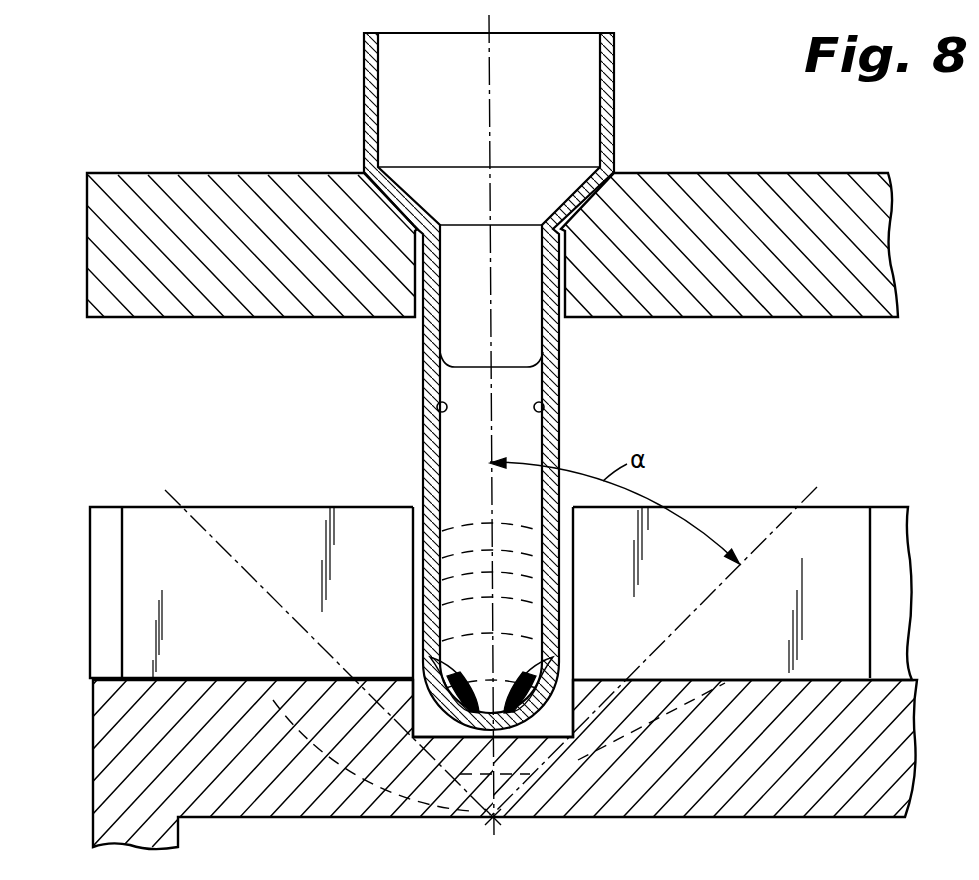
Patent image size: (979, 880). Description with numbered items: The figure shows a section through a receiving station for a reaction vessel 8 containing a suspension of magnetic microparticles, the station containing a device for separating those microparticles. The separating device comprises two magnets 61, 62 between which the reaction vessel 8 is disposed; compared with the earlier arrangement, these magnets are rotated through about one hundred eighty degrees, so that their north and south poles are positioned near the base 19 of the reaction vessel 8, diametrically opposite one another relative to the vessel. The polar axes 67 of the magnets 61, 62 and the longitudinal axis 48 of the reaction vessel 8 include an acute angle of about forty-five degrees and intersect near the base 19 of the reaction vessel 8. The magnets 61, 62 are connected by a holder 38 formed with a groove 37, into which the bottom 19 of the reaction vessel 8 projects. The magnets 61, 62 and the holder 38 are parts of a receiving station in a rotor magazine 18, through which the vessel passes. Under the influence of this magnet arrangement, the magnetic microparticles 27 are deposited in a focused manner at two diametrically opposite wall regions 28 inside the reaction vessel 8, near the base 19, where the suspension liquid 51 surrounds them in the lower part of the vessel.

The reaction vessel 8 is at (614, 77).
The longitudinal axis 48 is at (492, 123).
The rotor magazine 18 is at (715, 174).
The liquid 51 is at (462, 356).
The wall regions 28 is at (586, 396).
The magnet 61 is at (258, 532).
The magnet 62 is at (729, 532).
The polar axes 67 is at (722, 583).
The magnetic microparticles 27 is at (547, 660).
The holder 38 is at (108, 818).
The groove 37 is at (449, 738).
The base 19 is at (513, 718).